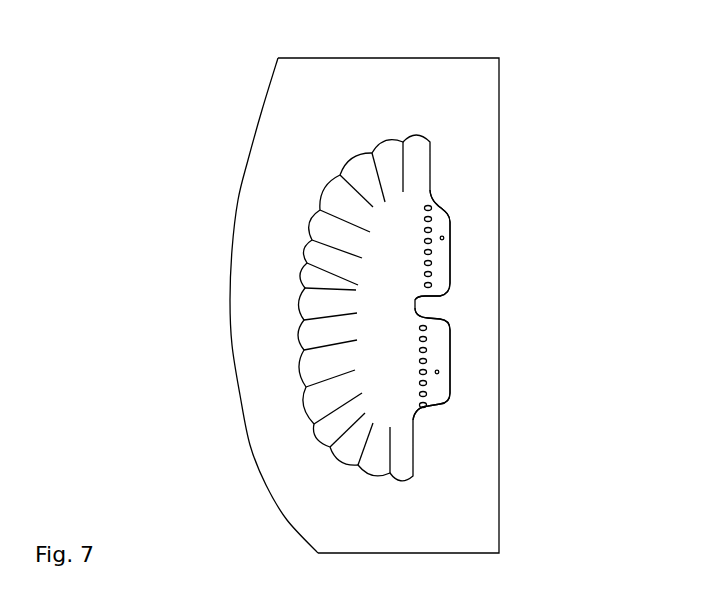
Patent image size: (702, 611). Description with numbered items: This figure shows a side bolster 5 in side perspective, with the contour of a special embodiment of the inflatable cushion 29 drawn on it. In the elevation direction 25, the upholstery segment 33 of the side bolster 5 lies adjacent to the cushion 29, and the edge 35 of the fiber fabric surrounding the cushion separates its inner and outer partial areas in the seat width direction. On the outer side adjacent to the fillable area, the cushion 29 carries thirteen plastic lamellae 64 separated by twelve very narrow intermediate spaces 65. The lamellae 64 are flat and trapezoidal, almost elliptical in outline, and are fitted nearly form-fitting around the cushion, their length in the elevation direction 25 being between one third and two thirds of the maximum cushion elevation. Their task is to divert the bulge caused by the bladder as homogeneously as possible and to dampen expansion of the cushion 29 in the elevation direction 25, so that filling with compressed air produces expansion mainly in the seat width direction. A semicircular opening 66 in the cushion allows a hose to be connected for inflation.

The side bolster 5 is at (518, 537).
The elevation direction 25 is at (356, 35).
The cushion 29 is at (408, 412).
The upholstery segment 33 is at (242, 312).
The edge 35 is at (317, 433).
The plastic lamellae 64 is at (308, 367).
The intermediate spaces 65 is at (306, 263).
The semicircular opening 66 is at (437, 297).